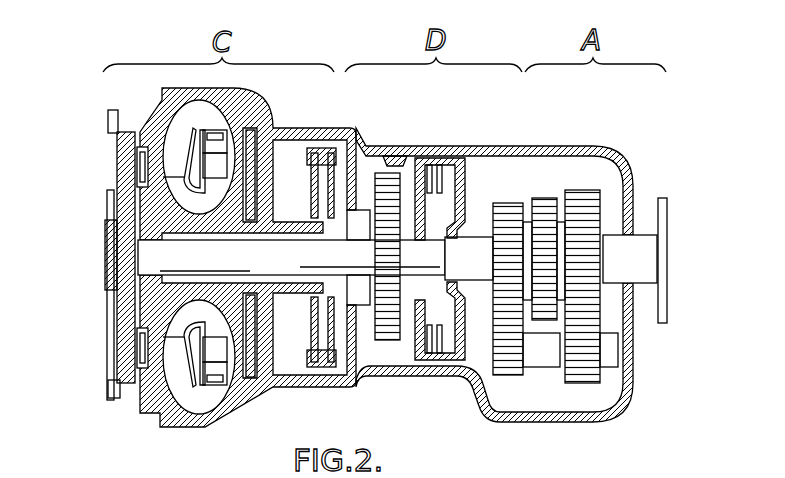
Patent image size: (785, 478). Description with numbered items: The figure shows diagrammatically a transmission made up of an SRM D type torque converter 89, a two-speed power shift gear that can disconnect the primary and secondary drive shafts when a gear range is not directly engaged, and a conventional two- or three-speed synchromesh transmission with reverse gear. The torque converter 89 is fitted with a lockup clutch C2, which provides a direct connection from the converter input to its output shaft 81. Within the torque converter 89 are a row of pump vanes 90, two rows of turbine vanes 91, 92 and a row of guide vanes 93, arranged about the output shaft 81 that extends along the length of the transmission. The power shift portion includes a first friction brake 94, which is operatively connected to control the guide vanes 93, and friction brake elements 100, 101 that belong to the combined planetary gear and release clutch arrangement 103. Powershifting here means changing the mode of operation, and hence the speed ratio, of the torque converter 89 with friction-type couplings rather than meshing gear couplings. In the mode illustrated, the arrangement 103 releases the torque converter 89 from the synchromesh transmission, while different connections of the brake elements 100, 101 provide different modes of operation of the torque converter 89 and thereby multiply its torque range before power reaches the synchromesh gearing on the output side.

The output shaft 81 is at (290, 264).
The torque converter 89 is at (146, 389).
The pump vanes 90 is at (176, 143).
The turbine vanes 91 is at (214, 152).
The turbine vanes 92 is at (215, 180).
The guide vanes 93 is at (217, 137).
The first friction brake 94 is at (322, 152).
The friction brake element 100 is at (402, 152).
The friction brake element 101 is at (438, 189).
The combined planetary gear and release clutch arrangement 103 is at (420, 378).
The lockup clutch C2 is at (139, 152).